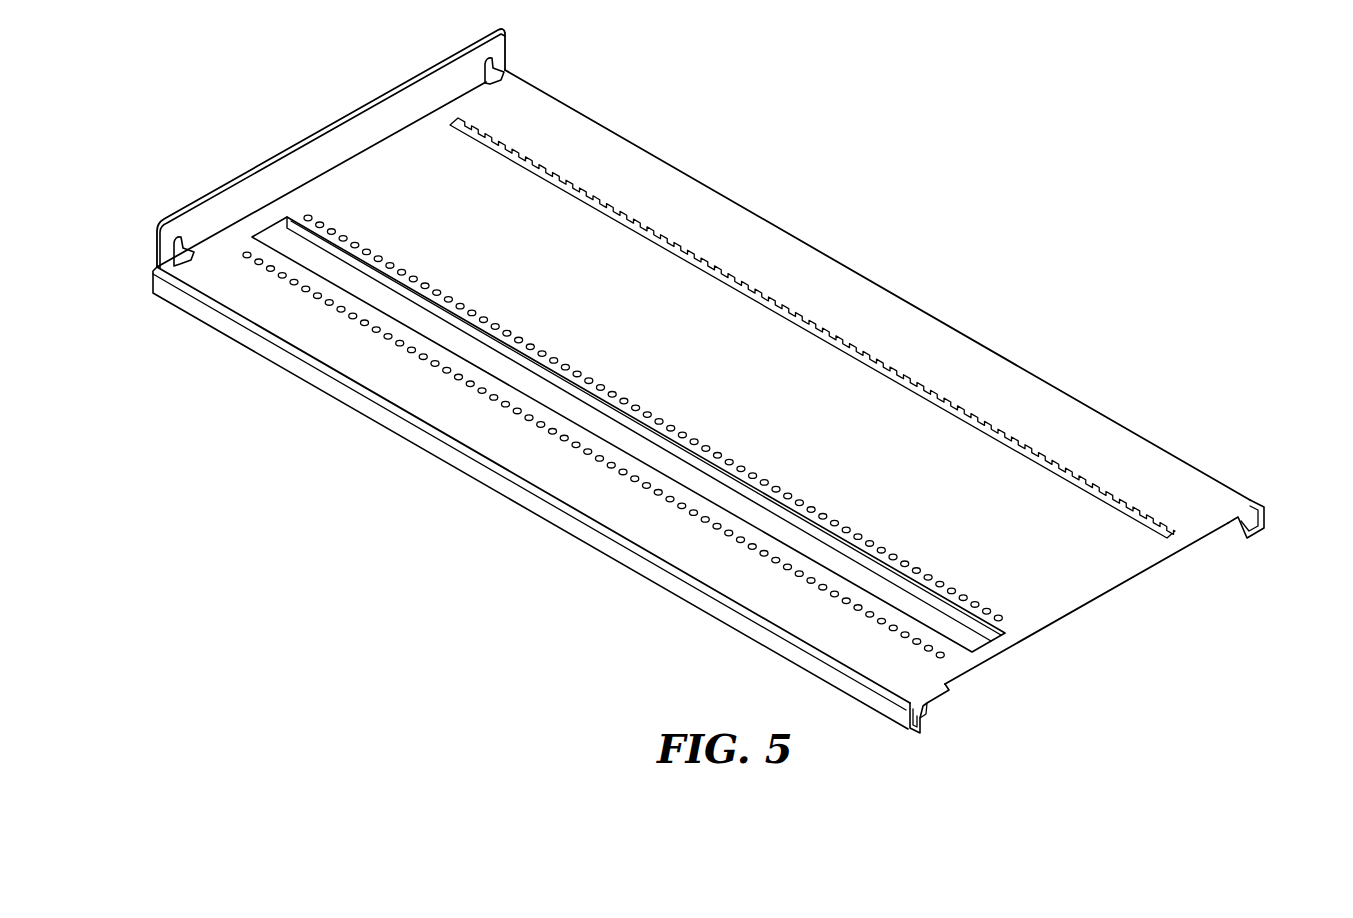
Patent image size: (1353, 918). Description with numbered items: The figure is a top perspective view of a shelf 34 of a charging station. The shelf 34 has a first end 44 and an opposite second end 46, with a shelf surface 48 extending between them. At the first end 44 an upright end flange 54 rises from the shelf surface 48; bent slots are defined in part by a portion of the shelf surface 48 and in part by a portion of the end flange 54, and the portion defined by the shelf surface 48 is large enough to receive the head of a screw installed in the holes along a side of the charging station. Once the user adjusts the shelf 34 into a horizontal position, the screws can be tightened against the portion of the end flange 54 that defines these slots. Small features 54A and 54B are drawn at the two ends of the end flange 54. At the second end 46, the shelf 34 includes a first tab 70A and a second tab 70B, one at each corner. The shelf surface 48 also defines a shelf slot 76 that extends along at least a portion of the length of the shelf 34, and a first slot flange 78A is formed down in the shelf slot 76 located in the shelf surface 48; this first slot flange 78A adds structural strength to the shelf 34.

The shelf 34 is at (866, 213).
The first end 44 is at (330, 125).
The second end 46 is at (1093, 603).
The shelf surface 48 is at (706, 368).
The end flange 54 is at (396, 100).
The first tab 54A is at (174, 254).
The second tab 54B is at (499, 61).
The first tab 70A is at (953, 697).
The second tab 70B is at (1240, 517).
The shelf slot 76 is at (492, 363).
The first slot flange 78A is at (403, 283).